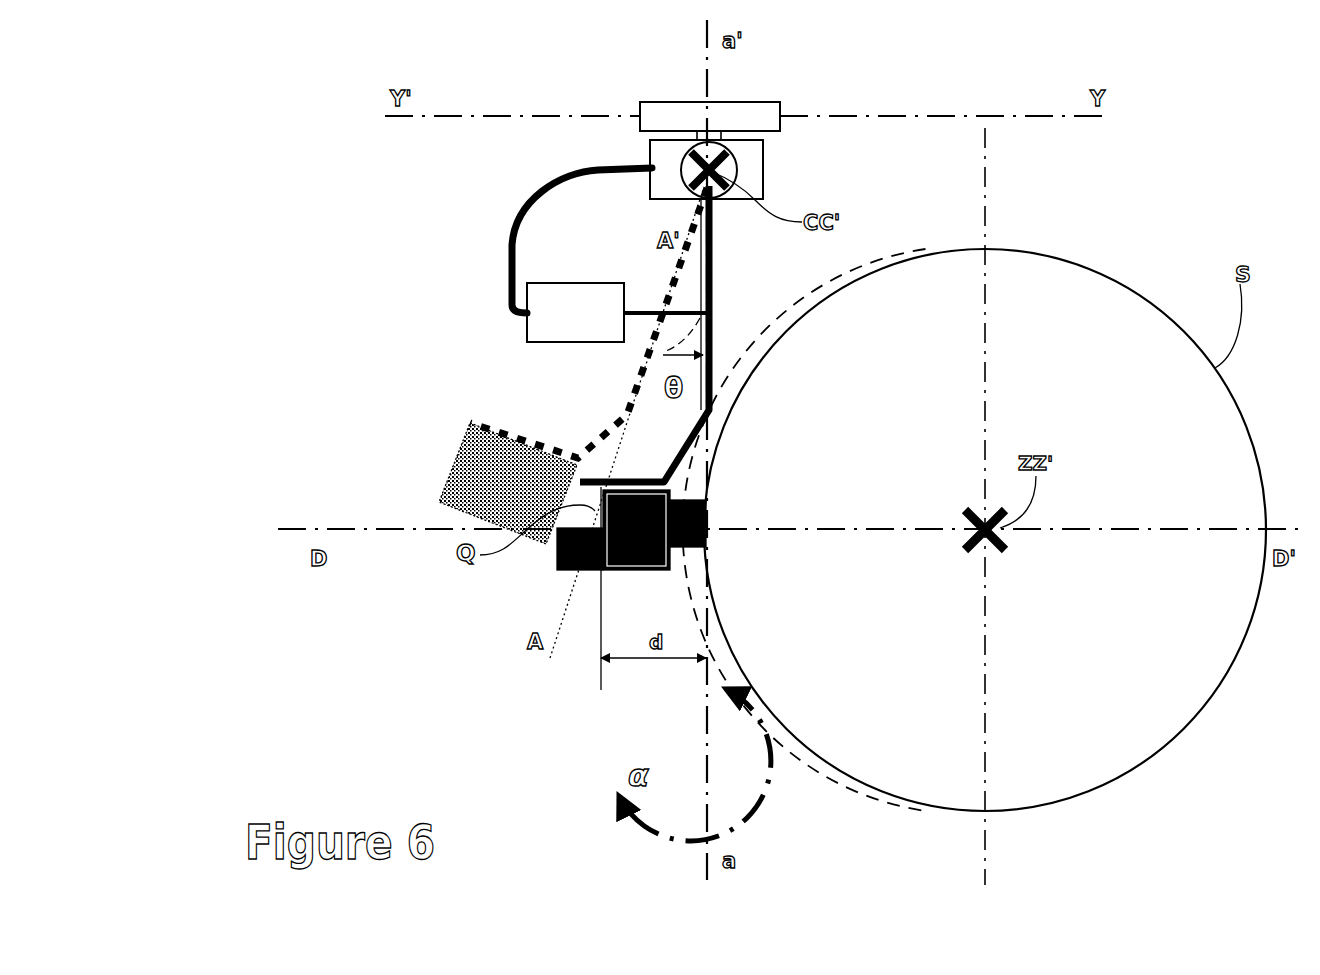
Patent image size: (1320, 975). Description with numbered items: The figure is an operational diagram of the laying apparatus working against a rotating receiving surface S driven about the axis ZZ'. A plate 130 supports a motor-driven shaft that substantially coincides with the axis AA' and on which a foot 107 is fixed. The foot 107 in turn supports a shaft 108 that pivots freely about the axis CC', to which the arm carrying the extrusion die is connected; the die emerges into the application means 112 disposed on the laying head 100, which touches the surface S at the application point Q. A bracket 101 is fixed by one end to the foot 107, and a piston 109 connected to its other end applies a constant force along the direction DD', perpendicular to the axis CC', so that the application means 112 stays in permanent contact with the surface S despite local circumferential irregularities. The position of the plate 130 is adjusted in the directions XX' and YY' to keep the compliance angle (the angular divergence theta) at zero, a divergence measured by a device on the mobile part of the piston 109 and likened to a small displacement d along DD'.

The laying head 100 is at (492, 485).
The bracket 101 is at (520, 222).
The foot 107 is at (763, 168).
The shaft 108 is at (700, 168).
The piston 109 is at (552, 305).
The application means 112 is at (553, 540).
The plate 130 is at (657, 102).